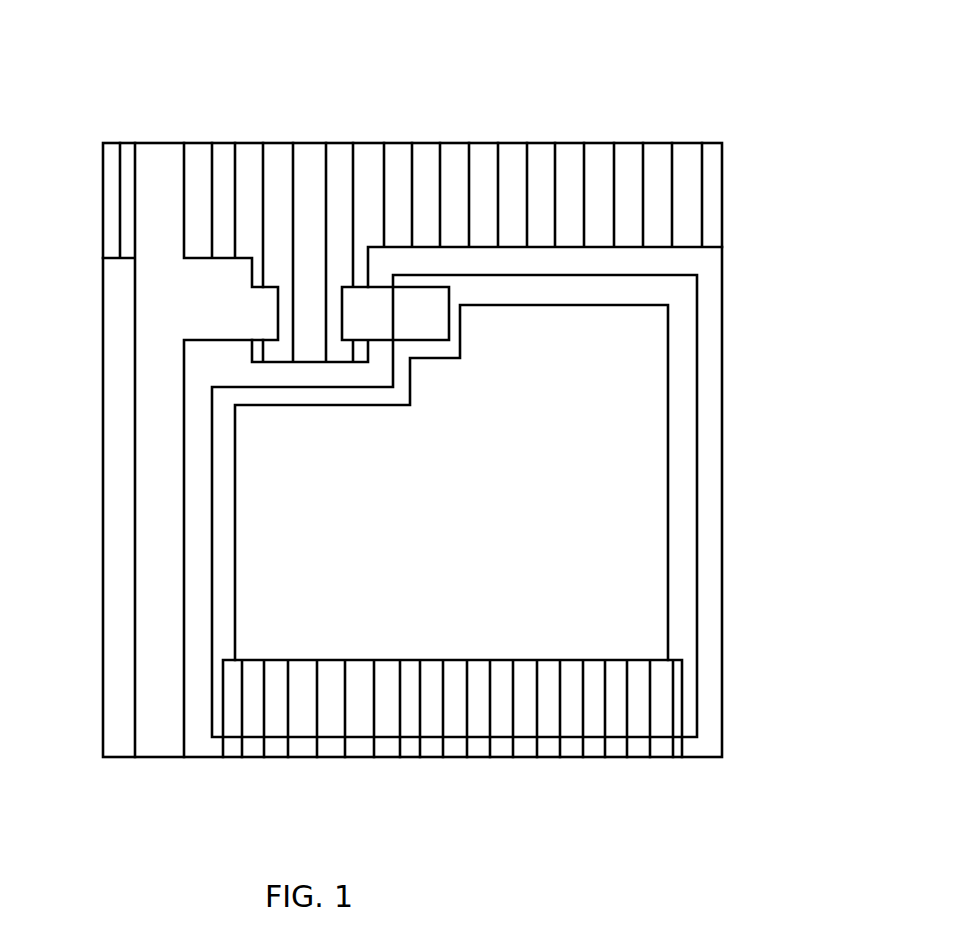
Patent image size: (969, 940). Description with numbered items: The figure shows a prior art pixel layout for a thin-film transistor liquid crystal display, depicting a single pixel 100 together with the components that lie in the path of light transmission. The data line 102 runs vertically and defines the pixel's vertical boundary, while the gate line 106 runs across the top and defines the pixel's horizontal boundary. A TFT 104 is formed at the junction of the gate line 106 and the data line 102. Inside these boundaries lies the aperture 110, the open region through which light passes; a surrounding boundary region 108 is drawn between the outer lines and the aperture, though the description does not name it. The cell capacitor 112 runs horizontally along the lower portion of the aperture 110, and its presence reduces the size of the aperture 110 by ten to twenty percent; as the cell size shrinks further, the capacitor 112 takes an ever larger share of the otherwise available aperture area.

The pixel 100 is at (78, 63).
The data line 102 is at (167, 312).
The TFT 104 is at (309, 317).
The gate line 106 is at (627, 198).
The guard ring 108 is at (707, 384).
The aperture 110 is at (572, 527).
The cell capacitor 112 is at (615, 722).